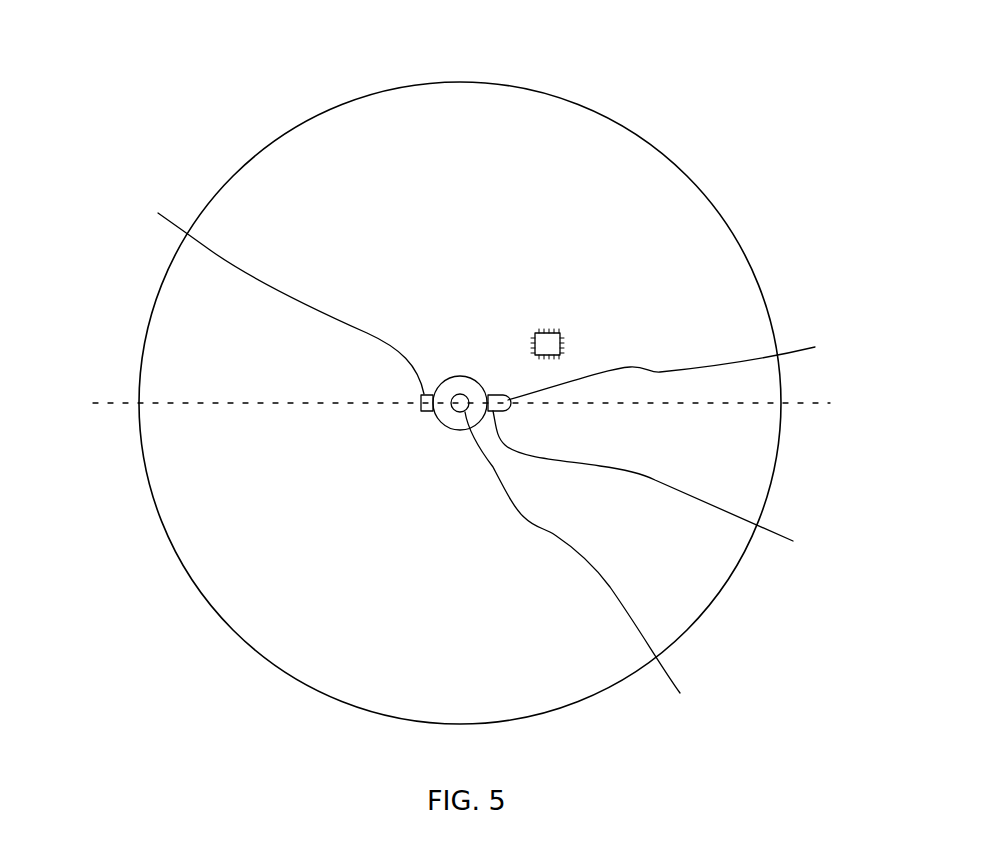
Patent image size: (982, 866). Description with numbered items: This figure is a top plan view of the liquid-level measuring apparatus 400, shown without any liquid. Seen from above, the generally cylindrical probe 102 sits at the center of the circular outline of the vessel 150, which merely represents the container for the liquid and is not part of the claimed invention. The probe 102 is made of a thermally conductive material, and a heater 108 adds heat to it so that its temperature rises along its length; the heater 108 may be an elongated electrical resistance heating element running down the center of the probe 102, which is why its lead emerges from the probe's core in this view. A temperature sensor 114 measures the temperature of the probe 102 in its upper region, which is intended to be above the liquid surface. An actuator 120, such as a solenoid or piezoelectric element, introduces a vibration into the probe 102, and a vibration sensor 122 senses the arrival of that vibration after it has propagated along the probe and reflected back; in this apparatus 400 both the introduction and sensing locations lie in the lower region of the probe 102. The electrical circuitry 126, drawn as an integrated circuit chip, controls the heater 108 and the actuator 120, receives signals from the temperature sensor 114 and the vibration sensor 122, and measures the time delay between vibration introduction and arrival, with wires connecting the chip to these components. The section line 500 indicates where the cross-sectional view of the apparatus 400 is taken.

The apparatus 400 is at (462, 277).
The probe 102 is at (462, 388).
The temperature sensor 114 is at (266, 286).
The electrical circuitry 126 is at (548, 343).
The actuator 120 is at (691, 365).
The vibration sensor 122 is at (672, 490).
The heater 108 is at (592, 571).
The vessel 150 is at (718, 597).
The section line 500 is at (112, 403).